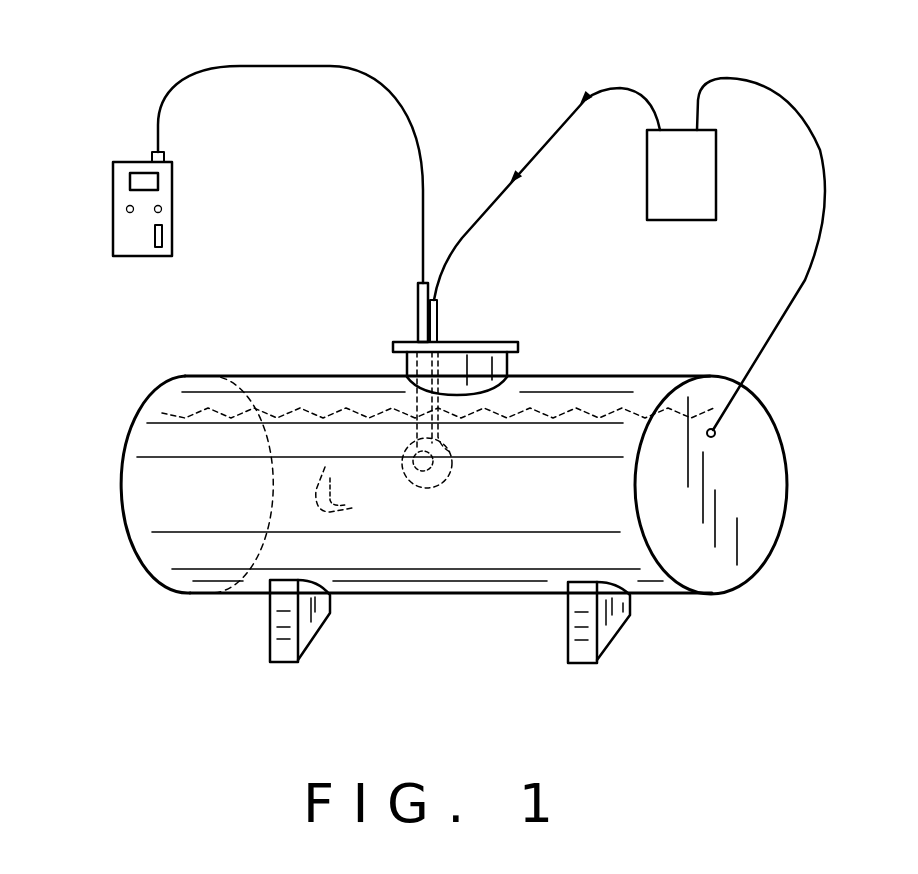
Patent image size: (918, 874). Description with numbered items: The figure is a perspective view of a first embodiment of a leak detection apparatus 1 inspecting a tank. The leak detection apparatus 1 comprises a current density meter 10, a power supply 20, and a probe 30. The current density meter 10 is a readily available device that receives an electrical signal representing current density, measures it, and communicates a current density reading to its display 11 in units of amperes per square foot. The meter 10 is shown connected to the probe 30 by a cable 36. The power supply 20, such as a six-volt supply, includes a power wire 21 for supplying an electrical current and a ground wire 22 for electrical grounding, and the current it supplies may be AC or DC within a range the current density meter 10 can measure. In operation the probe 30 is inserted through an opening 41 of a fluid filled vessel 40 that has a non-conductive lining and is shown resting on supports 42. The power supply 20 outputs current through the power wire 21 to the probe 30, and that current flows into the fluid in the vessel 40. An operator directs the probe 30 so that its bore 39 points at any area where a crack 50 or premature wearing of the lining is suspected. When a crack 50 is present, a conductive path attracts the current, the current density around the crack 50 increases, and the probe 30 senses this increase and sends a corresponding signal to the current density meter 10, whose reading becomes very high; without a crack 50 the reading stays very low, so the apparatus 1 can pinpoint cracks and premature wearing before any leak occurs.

The leak detection apparatus 1 is at (110, 96).
The current density meter 10 is at (185, 240).
The display 11 is at (158, 182).
The power supply 20 is at (697, 188).
The power wire 21 is at (630, 87).
The ground wire 22 is at (743, 78).
The probe 30 is at (405, 302).
The cable 36 is at (330, 70).
The bore 39 is at (418, 462).
The fluid filled vessel 40 is at (113, 522).
The opening 41 is at (508, 342).
The tank supports 42 is at (313, 625).
The crack 50 is at (343, 515).